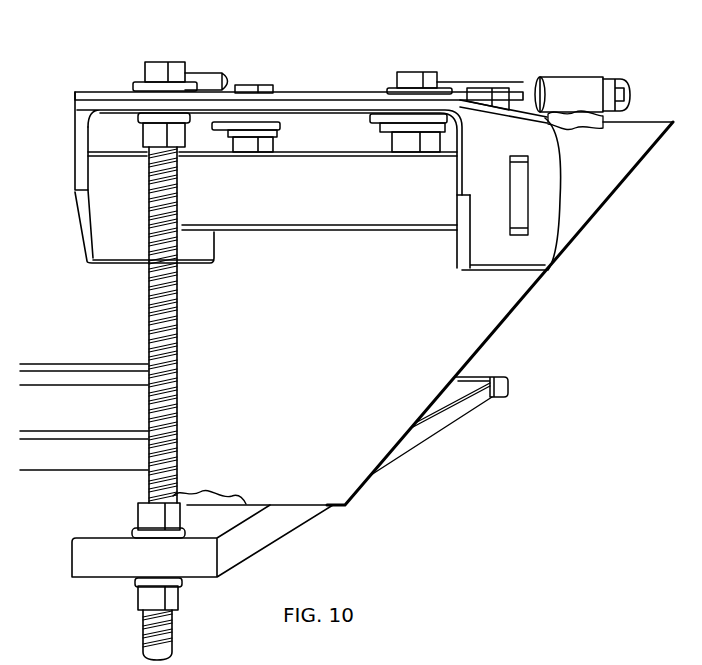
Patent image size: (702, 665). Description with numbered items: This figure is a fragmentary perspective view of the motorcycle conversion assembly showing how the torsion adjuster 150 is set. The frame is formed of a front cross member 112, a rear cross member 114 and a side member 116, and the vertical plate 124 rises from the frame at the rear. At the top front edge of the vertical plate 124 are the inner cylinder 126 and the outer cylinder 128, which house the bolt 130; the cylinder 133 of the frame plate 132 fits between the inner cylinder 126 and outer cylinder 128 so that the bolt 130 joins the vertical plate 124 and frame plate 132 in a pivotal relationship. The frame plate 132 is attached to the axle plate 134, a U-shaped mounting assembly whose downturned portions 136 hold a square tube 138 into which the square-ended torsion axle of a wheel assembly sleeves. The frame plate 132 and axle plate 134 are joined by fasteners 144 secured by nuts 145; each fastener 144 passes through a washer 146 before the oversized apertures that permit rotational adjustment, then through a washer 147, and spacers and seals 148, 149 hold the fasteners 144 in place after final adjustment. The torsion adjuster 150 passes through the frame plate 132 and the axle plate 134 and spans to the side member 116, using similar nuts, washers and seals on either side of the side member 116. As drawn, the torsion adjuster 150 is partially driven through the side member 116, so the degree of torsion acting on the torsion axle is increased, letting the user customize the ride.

The front cross member 112 is at (70, 363).
The rear cross member 114 is at (68, 433).
The side member 116 is at (435, 422).
The vertical plate 124 is at (348, 366).
The inner cylinder 126 is at (212, 76).
The outer cylinder 128 is at (575, 84).
The bolt 130 is at (621, 78).
The frame plate 132 is at (105, 88).
The cylinder 133 is at (335, 84).
The axle plate 134 is at (82, 108).
The downturned portion 136 is at (110, 195).
The square tube 138 is at (343, 214).
The fastener 144 is at (254, 84).
The nut 145 is at (147, 147).
The washer 146 is at (135, 86).
The washer 147 is at (377, 124).
The spacer and seal 148 is at (137, 113).
The spacer and seal 149 is at (150, 84).
The torsion adjuster 150 is at (164, 60).